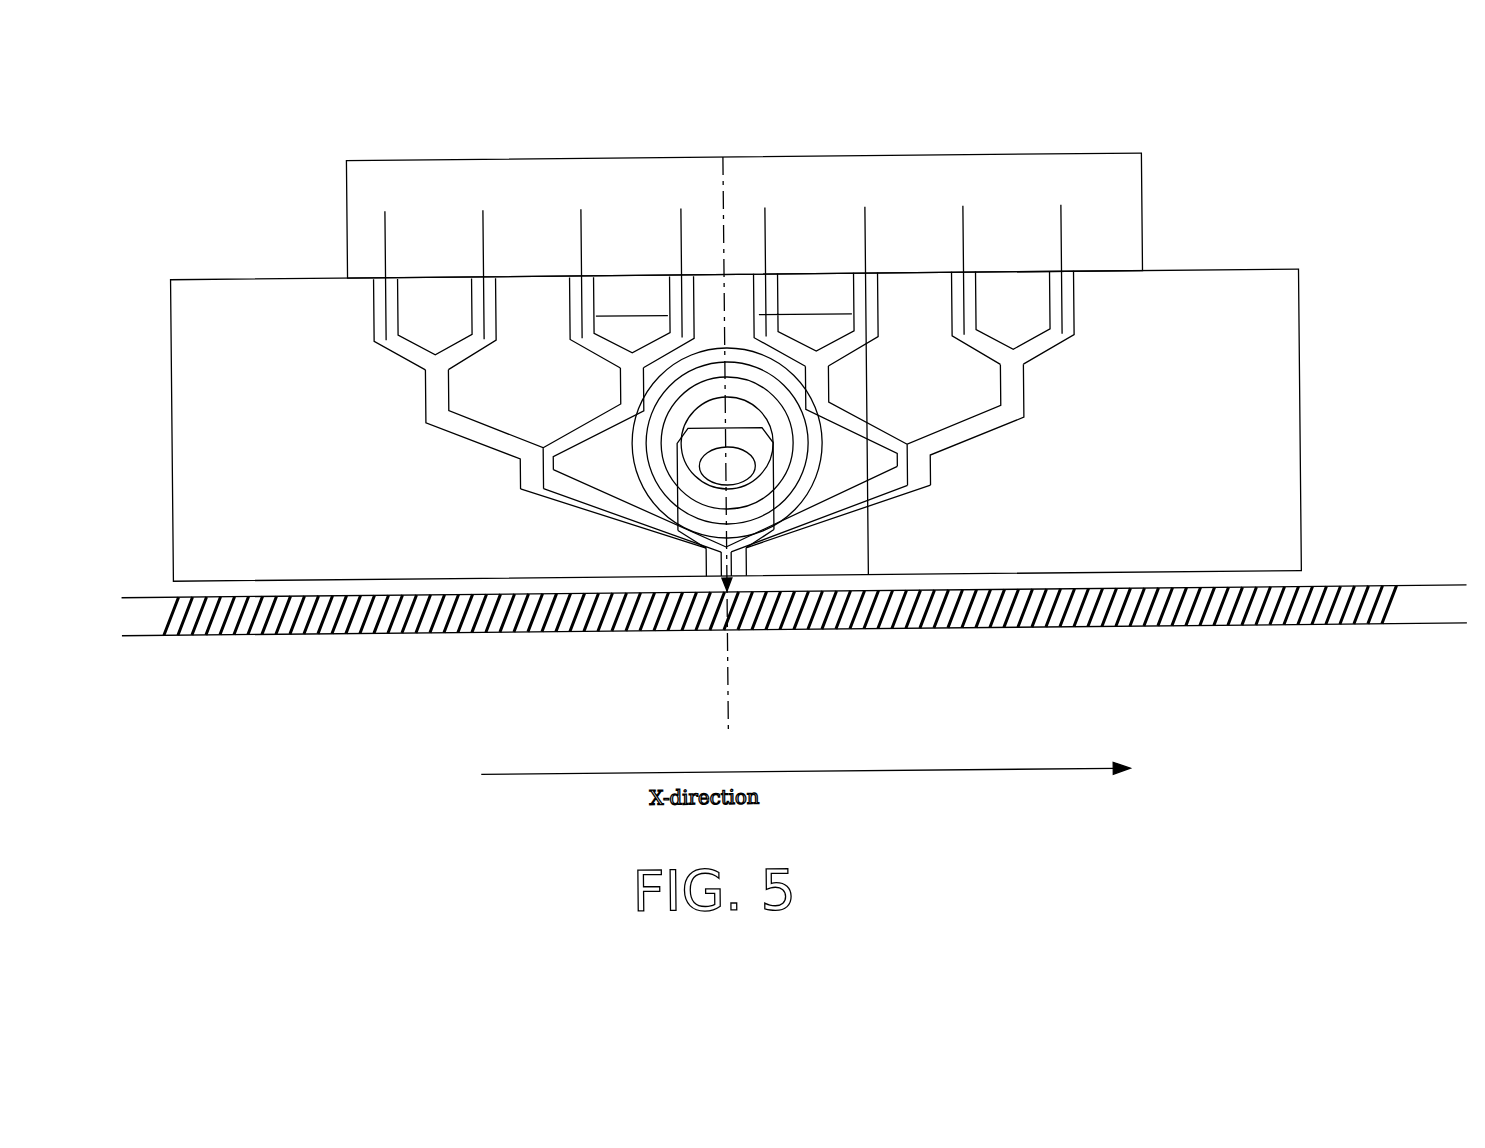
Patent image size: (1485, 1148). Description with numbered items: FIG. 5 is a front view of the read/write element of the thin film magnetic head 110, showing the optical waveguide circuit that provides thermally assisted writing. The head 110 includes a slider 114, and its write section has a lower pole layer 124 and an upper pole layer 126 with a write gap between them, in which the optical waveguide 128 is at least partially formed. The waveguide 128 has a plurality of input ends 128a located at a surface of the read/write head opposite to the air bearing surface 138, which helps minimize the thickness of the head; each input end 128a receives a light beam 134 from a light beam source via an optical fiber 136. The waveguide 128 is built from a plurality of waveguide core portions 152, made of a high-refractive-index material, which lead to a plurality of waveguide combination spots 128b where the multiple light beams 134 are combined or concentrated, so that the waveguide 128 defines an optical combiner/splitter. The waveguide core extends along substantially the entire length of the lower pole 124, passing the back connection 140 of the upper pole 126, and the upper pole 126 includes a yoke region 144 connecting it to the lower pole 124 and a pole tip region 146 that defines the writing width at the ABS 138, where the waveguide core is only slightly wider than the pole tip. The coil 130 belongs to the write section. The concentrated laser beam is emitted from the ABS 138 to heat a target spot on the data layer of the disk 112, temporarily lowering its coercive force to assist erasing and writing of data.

The thin film magnetic head 110 is at (1350, 278).
The disk 112 is at (1140, 611).
The slider 114 is at (1262, 497).
The lower pole layer 124 is at (607, 558).
The upper pole layer 126 is at (690, 500).
The optical waveguide 128 is at (993, 431).
The input ends 128a is at (688, 275).
The waveguide combination spots 128b is at (426, 369).
The coil 130 is at (636, 449).
The light beam 134 is at (1058, 243).
The optical fiber 136 is at (1123, 204).
The air bearing surface (ABS) 138 is at (403, 576).
The back connection 140 is at (713, 466).
The yoke region 144 is at (723, 497).
The pole tip region 146 is at (677, 530).
The waveguide core portions 152 is at (743, 337).